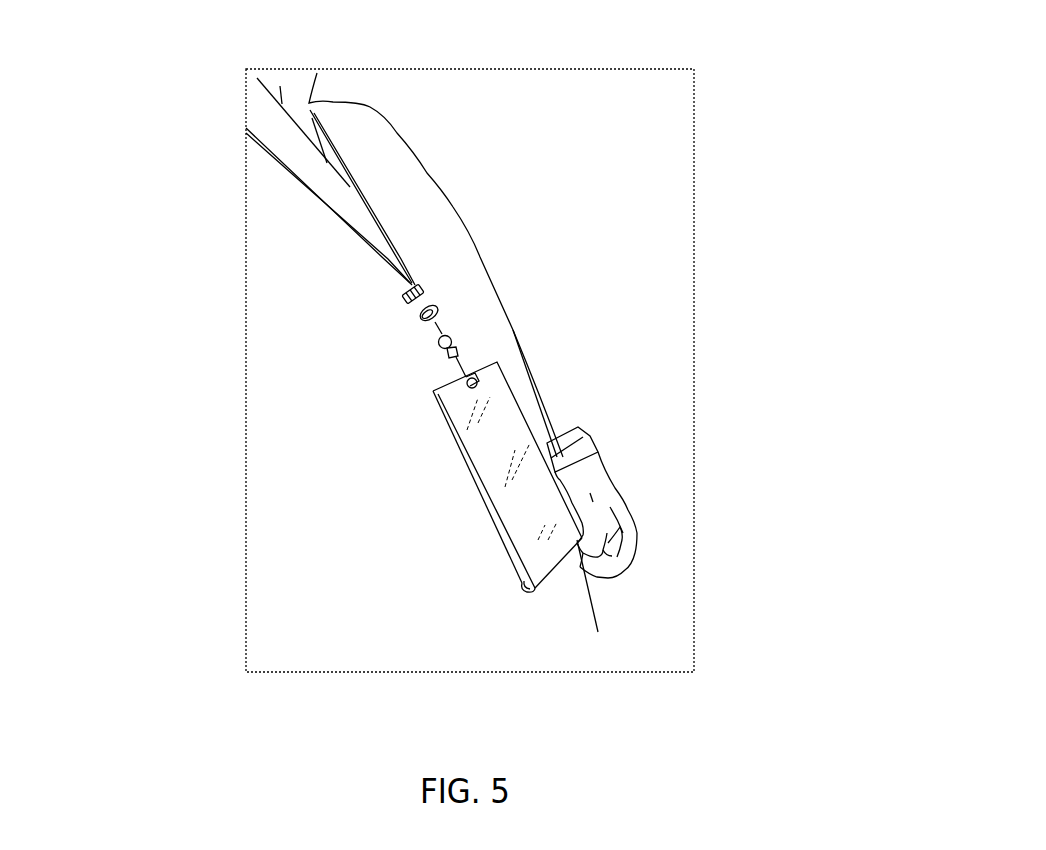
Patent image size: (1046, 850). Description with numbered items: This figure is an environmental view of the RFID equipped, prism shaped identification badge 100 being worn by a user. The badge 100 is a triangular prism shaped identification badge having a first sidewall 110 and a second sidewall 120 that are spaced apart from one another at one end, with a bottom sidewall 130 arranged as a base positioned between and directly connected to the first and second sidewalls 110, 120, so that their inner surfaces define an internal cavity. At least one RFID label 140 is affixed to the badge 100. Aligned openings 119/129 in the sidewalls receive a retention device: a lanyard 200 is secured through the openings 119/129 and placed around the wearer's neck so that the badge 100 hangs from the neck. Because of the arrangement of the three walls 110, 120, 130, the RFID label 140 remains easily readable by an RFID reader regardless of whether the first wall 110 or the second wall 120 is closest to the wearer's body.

The RFID equipped, prism shaped identification badge 100 is at (136, 78).
The first sidewall 110 is at (508, 556).
The opening 119 is at (476, 383).
The opening 129 is at (490, 384).
The second sidewall 120 is at (527, 481).
The bottom sidewall 130 is at (548, 576).
The RFID label 140 is at (520, 588).
The lanyard 200 is at (415, 306).